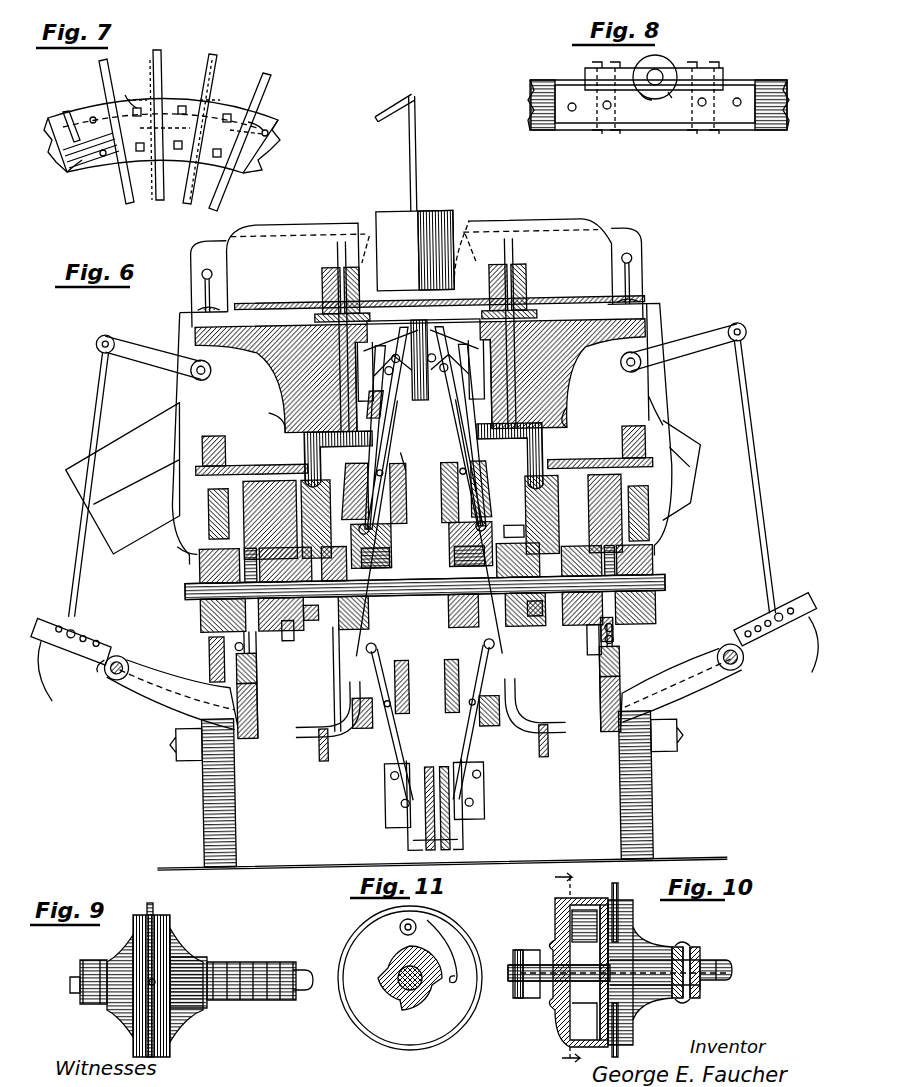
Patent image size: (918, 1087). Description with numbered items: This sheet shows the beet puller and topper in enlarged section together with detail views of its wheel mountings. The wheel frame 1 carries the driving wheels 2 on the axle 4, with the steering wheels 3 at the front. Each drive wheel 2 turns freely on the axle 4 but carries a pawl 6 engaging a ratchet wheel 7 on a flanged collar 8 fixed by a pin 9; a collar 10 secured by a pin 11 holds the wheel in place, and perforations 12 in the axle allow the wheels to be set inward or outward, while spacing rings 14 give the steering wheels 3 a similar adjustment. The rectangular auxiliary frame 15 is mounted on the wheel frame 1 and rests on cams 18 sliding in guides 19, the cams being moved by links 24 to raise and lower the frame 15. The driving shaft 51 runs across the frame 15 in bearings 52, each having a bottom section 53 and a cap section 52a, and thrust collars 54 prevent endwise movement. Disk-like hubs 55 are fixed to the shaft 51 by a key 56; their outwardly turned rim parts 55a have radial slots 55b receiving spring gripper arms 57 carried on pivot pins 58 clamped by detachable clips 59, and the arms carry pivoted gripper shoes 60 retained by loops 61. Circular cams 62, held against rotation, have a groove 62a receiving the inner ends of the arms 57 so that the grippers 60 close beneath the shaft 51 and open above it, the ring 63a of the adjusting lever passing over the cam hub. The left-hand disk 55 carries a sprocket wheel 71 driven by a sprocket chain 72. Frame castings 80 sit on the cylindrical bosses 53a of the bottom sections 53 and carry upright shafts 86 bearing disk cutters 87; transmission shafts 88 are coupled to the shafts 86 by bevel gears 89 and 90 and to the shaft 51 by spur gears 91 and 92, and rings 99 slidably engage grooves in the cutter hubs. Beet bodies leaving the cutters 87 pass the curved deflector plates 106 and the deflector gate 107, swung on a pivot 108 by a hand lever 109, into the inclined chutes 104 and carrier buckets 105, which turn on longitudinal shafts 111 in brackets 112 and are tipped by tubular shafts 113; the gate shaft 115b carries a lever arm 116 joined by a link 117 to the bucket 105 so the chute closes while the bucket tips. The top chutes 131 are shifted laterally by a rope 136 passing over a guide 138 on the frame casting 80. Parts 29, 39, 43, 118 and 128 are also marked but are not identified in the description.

In FIG. 6, the wheel frame 1 is at (257, 703).
In FIG. 10, the driving wheels 2 is at (624, 897).
In FIG. 6, the steering wheels 3 is at (212, 781).
In FIG. 9, the steering wheels 3 is at (156, 912).
In FIG. 11, the axle 4 is at (404, 992).
In FIG. 10, the axle 4 is at (712, 958).
In FIG. 11, the pawl 6 is at (400, 933).
In FIG. 10, the pawl 6 is at (584, 918).
In FIG. 11, the ratchet wheel 7 is at (385, 983).
In FIG. 10, the ratchet wheel 7 is at (590, 996).
In FIG. 11, the flanged collar 8 is at (460, 928).
In FIG. 10, the flanged collar 8 is at (560, 1028).
In FIG. 10, the pin 9 is at (522, 988).
In FIG. 10, the collar 10 is at (700, 990).
In FIG. 10, the pin 11 is at (705, 938).
In FIG. 10, the perforations 12 is at (553, 956).
In FIG. 9, the spacing rings 14 is at (257, 965).
In FIG. 8, the auxiliary frame 15 is at (771, 112).
In FIG. 6, the auxiliary frame 15 is at (286, 638).
In FIG. 6, the cams 18 is at (250, 656).
In FIG. 6, the guides 19 is at (257, 677).
In FIG. 6, the links 24 is at (234, 644).
In FIG. 6, the pipe 29 is at (315, 756).
In FIG. 6, the stud 39 is at (612, 641).
In FIG. 6, the plate 43 is at (600, 631).
In FIG. 6, the supporting and driving shaft 51 is at (185, 586).
In FIG. 8, the bearings 52 is at (672, 64).
In FIG. 6, the bearings 52 is at (286, 576).
In FIG. 8, the top or cap section 52a is at (640, 62).
In FIG. 6, the top or cap section 52a is at (324, 565).
In FIG. 8, the bottom section 53 is at (648, 93).
In FIG. 6, the bottom section 53 is at (330, 616).
In FIG. 6, the cylindrical bosses 53a is at (301, 541).
In FIG. 8, the thrust collars 54 is at (690, 90).
In FIG. 6, the thrust collars 54 is at (251, 556).
In FIG. 7, the disk-like hubs 55 is at (84, 162).
In FIG. 6, the disk-like hubs 55 is at (426, 587).
In FIG. 6, the rim parts 55a is at (482, 723).
In FIG. 7, the slots 55b is at (67, 115).
In FIG. 6, the slots 55b is at (418, 716).
In FIG. 6, the key 56 is at (395, 546).
In FIG. 7, the gripper arms 57 is at (160, 69).
In FIG. 6, the gripper arms 57 is at (452, 748).
In FIG. 7, the pivot pins 58 is at (252, 128).
In FIG. 6, the pivot pins 58 is at (460, 455).
In FIG. 7, the detachable clips 59 is at (128, 104).
In FIG. 6, the detachable clips 59 is at (426, 582).
In FIG. 6, the gripper shoes 60 is at (453, 362).
In FIG. 6, the loops 61 is at (393, 790).
In FIG. 6, the circular cams 62 is at (360, 526).
In FIG. 6, the groove 62a is at (365, 650).
In FIG. 6, the ring 63a is at (520, 532).
In FIG. 6, the sprocket wheel 71 is at (362, 456).
In FIG. 6, the sprocket chain 72 is at (336, 746).
In FIG. 6, the frame castings 80 is at (398, 362).
In FIG. 6, the upright shafts 86 is at (292, 372).
In FIG. 6, the disk cutters 87 is at (296, 302).
In FIG. 6, the transmission shafts 88 is at (280, 452).
In FIG. 6, the bevel gear 89 is at (347, 450).
In FIG. 6, the bevel gear 90 is at (424, 517).
In FIG. 6, the spur gear 91 is at (206, 446).
In FIG. 6, the spur gear 92 is at (208, 533).
In FIG. 6, the rings 99 is at (326, 284).
In FIG. 6, the chutes 104 is at (178, 440).
In FIG. 6, the carrier buckets 105 is at (64, 611).
In FIG. 6, the deflector plates 106 is at (318, 228).
In FIG. 6, the deflector gate 107 is at (415, 216).
In FIG. 6, the pivot 108 is at (426, 180).
In FIG. 6, the hand lever 109 is at (395, 113).
In FIG. 6, the longitudinal shafts 111 is at (103, 667).
In FIG. 6, the brackets 112 is at (140, 692).
In FIG. 6, the tubular shafts 113 is at (103, 664).
In FIG. 6, the shaft 115b is at (212, 374).
In FIG. 6, the lever arm 116 is at (145, 348).
In FIG. 6, the link 117 is at (100, 399).
In FIG. 6, the rod 118 is at (461, 285).
In FIG. 6, the plate 128 is at (183, 549).
In FIG. 6, the chutes 131 is at (703, 463).
In FIG. 6, the rope 136 is at (278, 415).
In FIG. 6, the guide 138 is at (658, 405).